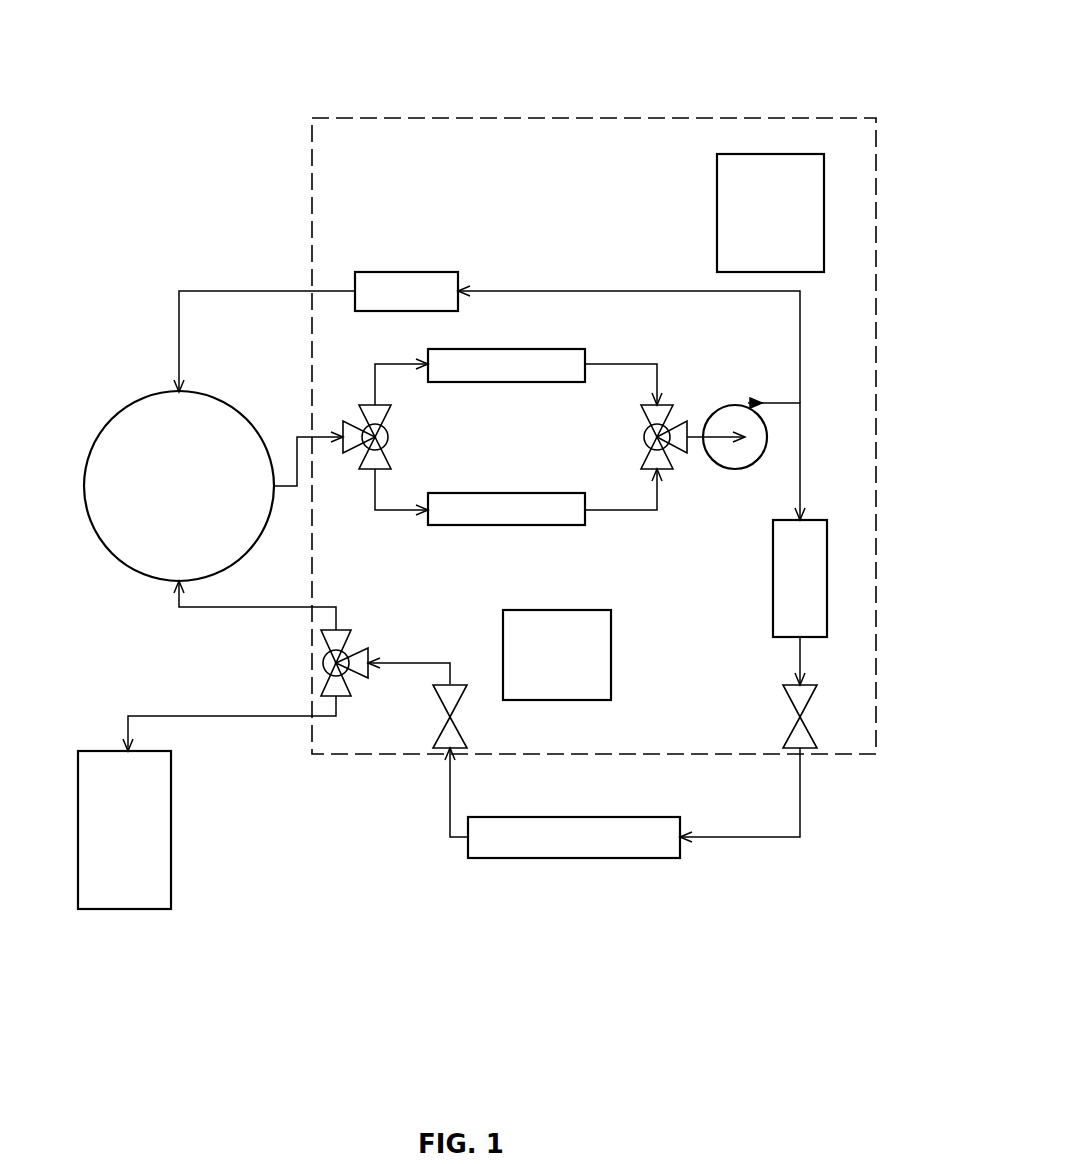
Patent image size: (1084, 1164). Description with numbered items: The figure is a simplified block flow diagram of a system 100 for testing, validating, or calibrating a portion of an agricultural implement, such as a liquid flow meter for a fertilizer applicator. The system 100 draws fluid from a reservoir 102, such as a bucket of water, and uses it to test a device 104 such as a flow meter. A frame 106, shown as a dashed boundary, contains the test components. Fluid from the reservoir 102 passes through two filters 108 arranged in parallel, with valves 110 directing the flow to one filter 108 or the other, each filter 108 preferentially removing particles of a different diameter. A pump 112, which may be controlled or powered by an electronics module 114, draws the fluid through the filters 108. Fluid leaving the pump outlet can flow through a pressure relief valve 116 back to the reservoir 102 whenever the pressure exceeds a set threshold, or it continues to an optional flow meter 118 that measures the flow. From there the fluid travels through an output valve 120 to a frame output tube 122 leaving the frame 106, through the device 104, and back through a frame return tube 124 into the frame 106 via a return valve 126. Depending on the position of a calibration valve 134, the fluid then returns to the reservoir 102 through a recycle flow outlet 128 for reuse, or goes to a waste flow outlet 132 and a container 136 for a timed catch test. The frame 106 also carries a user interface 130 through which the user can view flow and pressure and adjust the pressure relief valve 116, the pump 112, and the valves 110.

The system 100 is at (833, 55).
The reservoir 102 is at (108, 428).
The device 104 is at (573, 858).
The frame 106 is at (552, 118).
The filters 108 is at (620, 561).
The valves 110 is at (388, 418).
The pump 112 is at (742, 470).
The electronics module 114 is at (824, 194).
The pressure relief valve 116 is at (403, 272).
The flow meter 118 is at (827, 577).
The output valve 120 is at (812, 702).
The frame output tube 122 is at (800, 806).
The frame return tube 124 is at (448, 817).
The return valve 126 is at (436, 735).
The recycle flow outlet 128 is at (215, 607).
The user interface 130 is at (600, 683).
The waste flow outlet 132 is at (233, 716).
The calibration valve 134 is at (352, 635).
The container 136 is at (152, 875).